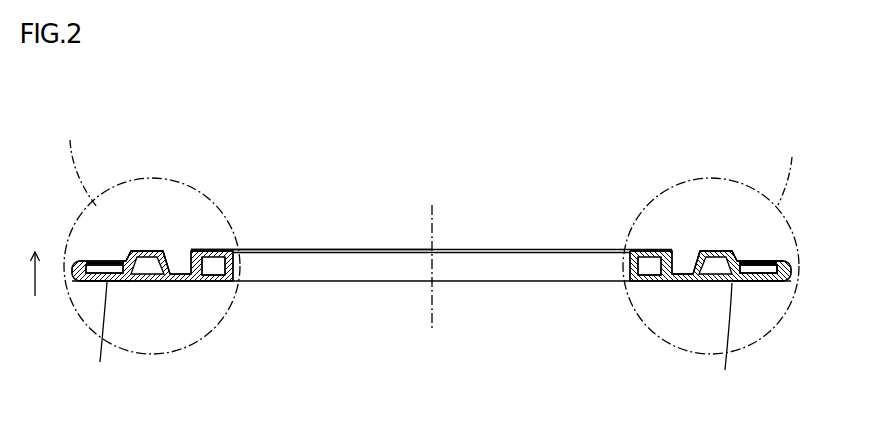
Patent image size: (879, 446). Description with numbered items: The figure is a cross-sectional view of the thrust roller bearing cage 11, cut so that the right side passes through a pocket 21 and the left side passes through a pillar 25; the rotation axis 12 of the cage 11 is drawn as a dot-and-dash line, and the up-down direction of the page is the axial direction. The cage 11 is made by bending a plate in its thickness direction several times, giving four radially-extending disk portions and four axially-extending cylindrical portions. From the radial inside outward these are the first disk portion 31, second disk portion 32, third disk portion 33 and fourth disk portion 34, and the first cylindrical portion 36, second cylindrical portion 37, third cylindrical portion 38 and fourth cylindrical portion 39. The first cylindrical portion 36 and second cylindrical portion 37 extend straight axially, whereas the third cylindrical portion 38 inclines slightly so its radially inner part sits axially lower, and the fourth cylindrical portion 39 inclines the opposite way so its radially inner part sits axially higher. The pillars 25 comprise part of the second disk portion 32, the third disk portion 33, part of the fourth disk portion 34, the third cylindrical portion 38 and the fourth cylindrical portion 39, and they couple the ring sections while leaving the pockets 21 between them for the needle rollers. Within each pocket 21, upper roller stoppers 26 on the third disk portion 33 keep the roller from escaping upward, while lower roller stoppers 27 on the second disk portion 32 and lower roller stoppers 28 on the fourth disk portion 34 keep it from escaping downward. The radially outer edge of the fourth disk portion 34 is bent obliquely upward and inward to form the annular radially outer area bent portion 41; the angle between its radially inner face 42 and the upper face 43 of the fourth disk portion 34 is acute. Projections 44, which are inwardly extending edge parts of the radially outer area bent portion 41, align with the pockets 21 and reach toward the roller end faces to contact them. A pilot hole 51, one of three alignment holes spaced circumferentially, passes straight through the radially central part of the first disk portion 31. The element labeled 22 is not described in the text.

The thrust roller bearing cage 11 is at (433, 238).
The rotation axis 12 is at (433, 334).
The pocket 21 is at (716, 283).
The panel plate 22 is at (336, 266).
The pillar 25 is at (166, 231).
The upper roller stopper 26 is at (716, 243).
The lower roller stopper 27 is at (674, 283).
The lower roller stopper 28 is at (750, 283).
The first disk portion 31 is at (211, 250).
The second disk portion 32 is at (180, 283).
The third disk portion 33 is at (148, 250).
The fourth disk portion 34 is at (99, 283).
The first cylindrical portion 36 is at (236, 268).
The second cylindrical portion 37 is at (207, 270).
The third cylindrical portion 38 is at (173, 262).
The fourth cylindrical portion 39 is at (121, 260).
The radially outer area bent portion 41 is at (83, 260).
The face 42 is at (108, 261).
The face 43 is at (134, 282).
The projection 44 is at (766, 262).
The pilot hole 51 is at (222, 251).